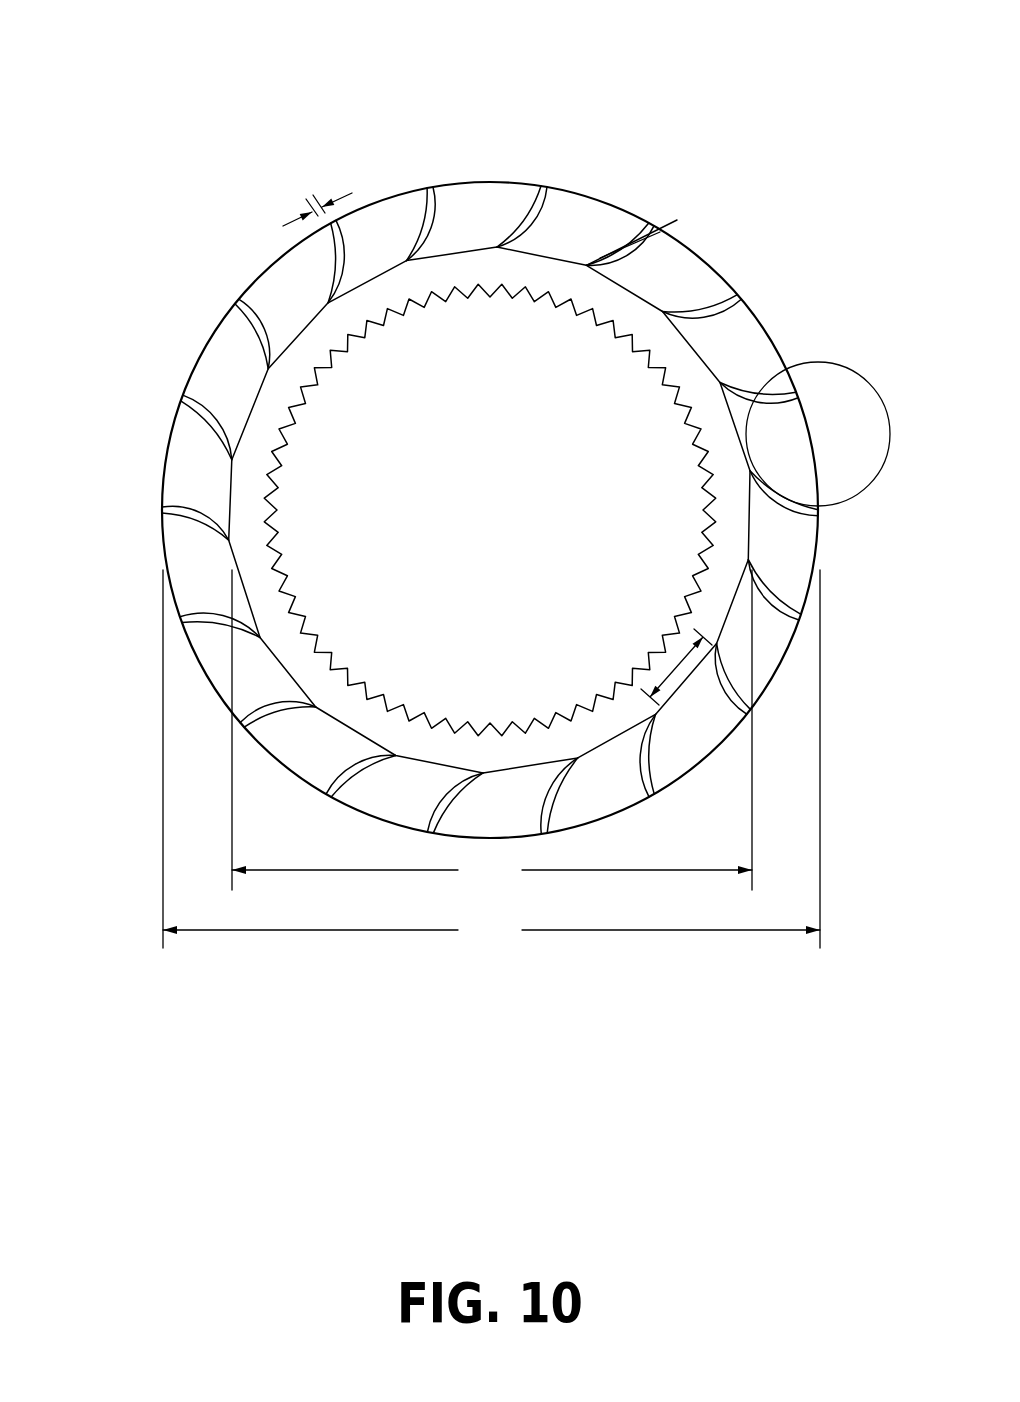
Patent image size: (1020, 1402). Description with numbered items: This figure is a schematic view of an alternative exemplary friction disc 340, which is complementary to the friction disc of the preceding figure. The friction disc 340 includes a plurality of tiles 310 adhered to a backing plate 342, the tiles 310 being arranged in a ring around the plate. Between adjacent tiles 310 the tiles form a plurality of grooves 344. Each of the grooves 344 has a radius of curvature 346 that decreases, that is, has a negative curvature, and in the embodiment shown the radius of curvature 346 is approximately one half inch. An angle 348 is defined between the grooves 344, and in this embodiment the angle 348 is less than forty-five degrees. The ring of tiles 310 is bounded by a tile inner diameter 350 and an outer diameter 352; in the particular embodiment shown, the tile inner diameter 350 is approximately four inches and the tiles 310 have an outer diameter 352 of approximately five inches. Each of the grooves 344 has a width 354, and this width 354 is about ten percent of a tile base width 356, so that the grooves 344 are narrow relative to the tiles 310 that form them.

The tiles 310 is at (303, 262).
The friction disc 340 is at (822, 179).
The backing plate 342 is at (463, 265).
The grooves 344 is at (431, 188).
The radius of curvature 346 is at (778, 488).
The angle 348 is at (650, 262).
The tile inner diameter 350 is at (492, 730).
The outer diameter 352 is at (491, 759).
The width 354 is at (318, 213).
The tile base width 356 is at (668, 666).